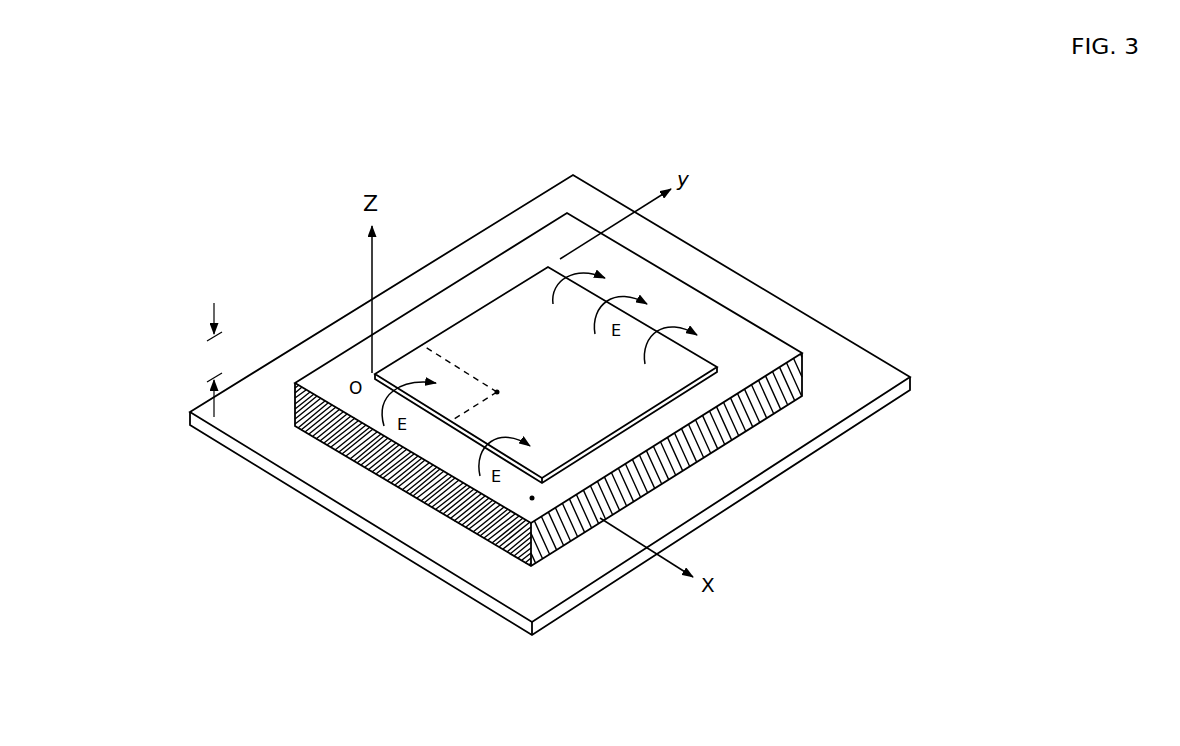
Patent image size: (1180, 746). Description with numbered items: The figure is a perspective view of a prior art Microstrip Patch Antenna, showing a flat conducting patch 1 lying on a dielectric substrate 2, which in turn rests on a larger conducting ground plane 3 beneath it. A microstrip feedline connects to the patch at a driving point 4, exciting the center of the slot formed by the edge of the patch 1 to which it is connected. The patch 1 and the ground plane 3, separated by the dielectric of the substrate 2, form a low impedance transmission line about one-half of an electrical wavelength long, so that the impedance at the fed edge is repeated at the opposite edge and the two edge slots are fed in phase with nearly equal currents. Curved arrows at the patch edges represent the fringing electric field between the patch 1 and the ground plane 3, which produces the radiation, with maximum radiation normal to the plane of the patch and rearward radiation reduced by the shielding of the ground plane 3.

The patch (labeled PATCH in drawing) 1 is at (546, 367).
The substrate (labeled SUBSTRATE εr) 2 is at (504, 389).
The groundplane (labeled GROUNDPLANE σ) 3 is at (550, 405).
The driving point (labeled DRIVING POINT) 4 is at (653, 274).